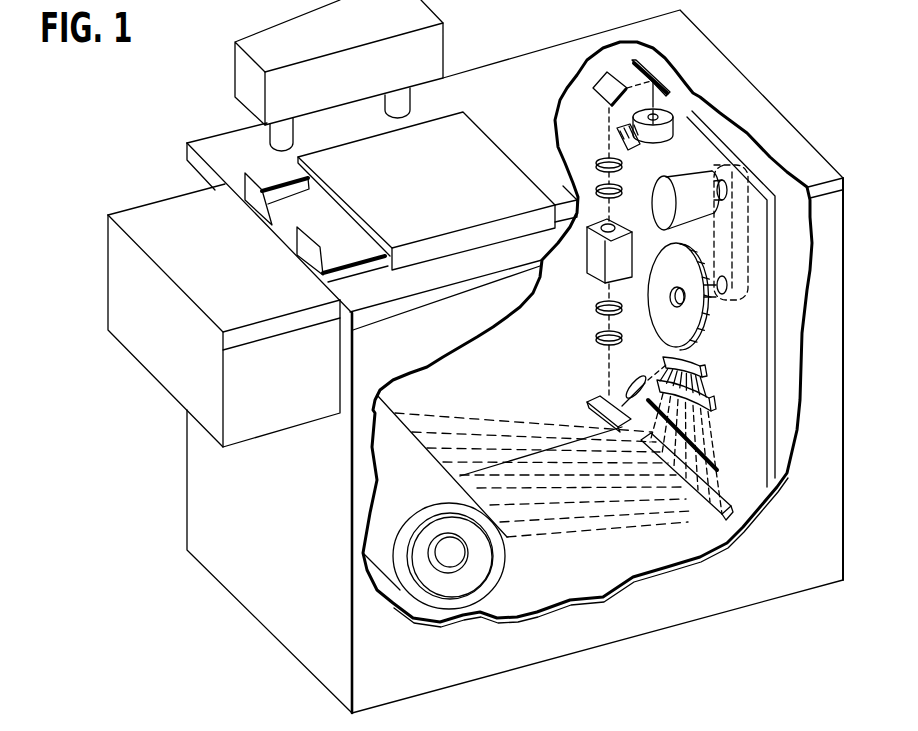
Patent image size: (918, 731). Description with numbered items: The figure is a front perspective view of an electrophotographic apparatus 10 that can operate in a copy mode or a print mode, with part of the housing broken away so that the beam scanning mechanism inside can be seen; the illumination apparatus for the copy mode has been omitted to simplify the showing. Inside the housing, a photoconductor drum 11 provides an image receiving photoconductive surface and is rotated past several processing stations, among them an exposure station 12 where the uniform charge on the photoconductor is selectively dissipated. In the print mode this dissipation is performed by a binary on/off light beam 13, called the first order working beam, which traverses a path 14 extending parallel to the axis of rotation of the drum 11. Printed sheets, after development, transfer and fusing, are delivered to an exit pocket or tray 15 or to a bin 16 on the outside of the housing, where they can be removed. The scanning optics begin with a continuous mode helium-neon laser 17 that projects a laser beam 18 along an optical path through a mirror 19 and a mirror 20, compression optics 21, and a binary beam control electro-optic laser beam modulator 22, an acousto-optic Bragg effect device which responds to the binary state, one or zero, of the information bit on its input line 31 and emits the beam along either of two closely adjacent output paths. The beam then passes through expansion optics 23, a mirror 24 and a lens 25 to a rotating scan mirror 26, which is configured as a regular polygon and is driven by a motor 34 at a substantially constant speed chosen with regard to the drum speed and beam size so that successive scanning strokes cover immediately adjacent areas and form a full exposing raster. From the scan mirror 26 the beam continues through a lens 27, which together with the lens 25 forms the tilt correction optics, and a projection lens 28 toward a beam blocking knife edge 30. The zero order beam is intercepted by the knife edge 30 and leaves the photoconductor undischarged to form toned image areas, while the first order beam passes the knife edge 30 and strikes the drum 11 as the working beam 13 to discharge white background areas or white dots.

The electrophotographic apparatus 10 is at (184, 487).
The photoconductor drum 11 is at (485, 585).
The exposure station 12 is at (508, 544).
The light beam 13 is at (597, 523).
The path 14 is at (543, 480).
The exit pocket or tray 15 is at (330, 226).
The bin 16 is at (170, 220).
The continuous mode helium-neon laser 17 is at (660, 137).
The laser beam 18 is at (654, 101).
The mirror 19 is at (654, 80).
The mirror 20 is at (598, 86).
The compression optics 21 is at (591, 175).
The binary beam control electro-optic laser beam modulator 22 is at (593, 272).
The expansion optics 23 is at (598, 328).
The mirror 24 is at (603, 400).
The lens 25 is at (635, 375).
The rotating scan mirror 26 is at (697, 318).
The lens 27 is at (702, 369).
The projection lens 28 is at (710, 403).
The beam blocking knife edge 30 is at (707, 468).
The input line 31 is at (592, 256).
The motor 34 is at (664, 201).